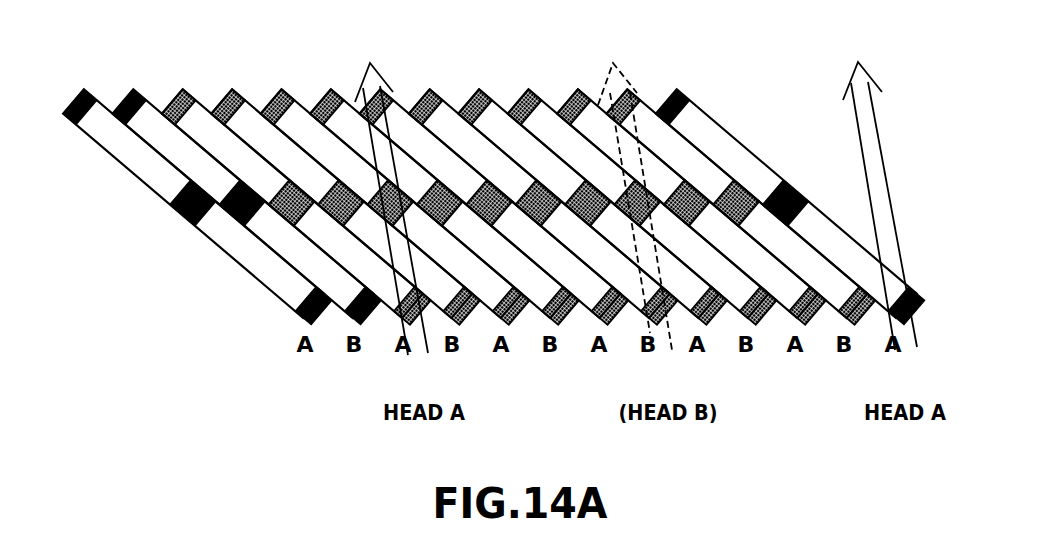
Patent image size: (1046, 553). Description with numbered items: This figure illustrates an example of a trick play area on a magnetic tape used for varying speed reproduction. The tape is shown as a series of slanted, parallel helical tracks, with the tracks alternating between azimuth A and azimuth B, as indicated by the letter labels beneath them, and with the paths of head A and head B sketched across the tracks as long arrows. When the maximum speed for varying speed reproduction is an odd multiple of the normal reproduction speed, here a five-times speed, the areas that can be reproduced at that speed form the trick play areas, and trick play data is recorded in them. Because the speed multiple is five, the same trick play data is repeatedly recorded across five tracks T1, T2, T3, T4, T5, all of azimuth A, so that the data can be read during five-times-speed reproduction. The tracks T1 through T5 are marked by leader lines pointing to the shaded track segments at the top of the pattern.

The track T1 is at (183, 89).
The track T2 is at (282, 89).
The track T3 is at (387, 103).
The track T4 is at (479, 89).
The track T5 is at (578, 89).